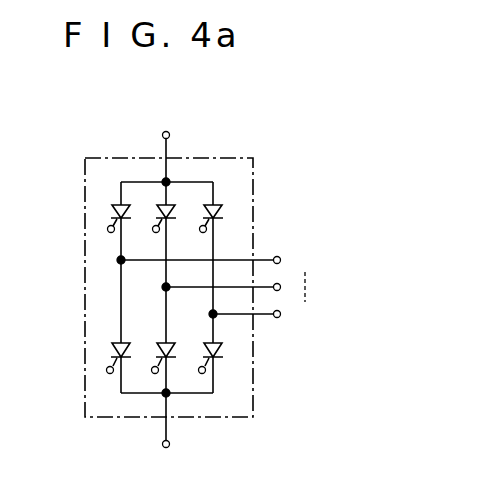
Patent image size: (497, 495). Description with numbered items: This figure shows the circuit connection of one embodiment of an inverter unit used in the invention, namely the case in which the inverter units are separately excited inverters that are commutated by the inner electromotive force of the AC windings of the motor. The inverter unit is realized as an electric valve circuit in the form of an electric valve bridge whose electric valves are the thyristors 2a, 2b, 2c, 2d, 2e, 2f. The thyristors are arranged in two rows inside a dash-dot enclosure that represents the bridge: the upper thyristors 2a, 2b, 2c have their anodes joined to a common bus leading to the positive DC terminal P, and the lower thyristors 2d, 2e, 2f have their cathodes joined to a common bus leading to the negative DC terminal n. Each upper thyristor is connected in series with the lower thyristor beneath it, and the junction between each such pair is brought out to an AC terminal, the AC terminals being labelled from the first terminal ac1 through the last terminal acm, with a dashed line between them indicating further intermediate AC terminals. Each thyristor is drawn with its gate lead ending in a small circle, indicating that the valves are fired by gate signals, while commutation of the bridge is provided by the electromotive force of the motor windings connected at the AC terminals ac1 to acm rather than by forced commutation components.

The thyristor 2a is at (132, 210).
The thyristor 2b is at (175, 215).
The thyristor 2c is at (222, 214).
The thyristor 2d is at (114, 352).
The thyristor 2e is at (158, 352).
The thyristor 2f is at (222, 353).
The positive DC terminal P is at (178, 145).
The negative DC terminal n is at (180, 407).
The AC terminal 1 ac1 is at (224, 254).
The AC terminal m acm is at (275, 314).